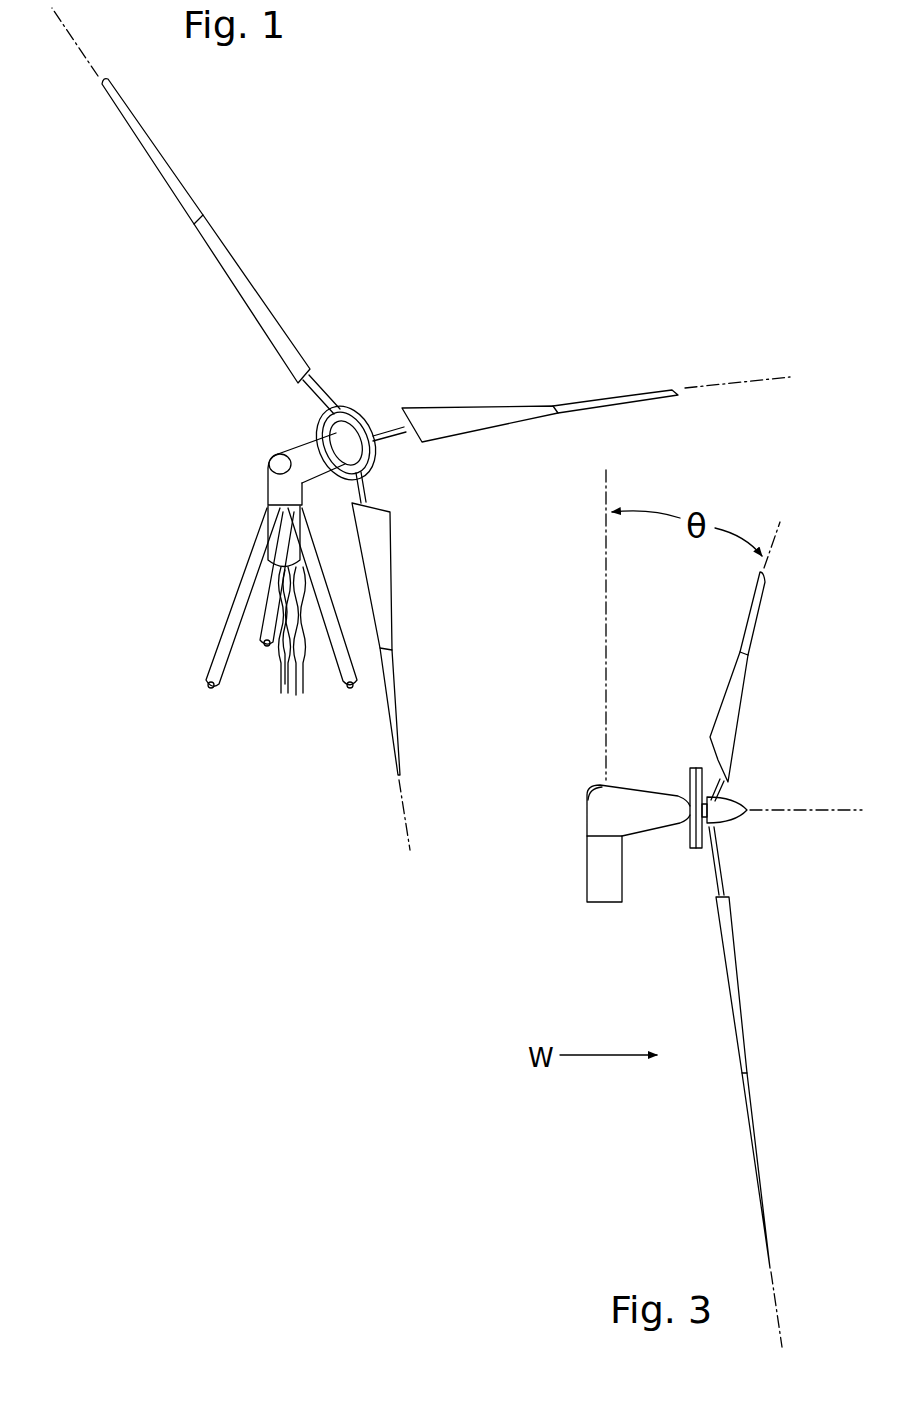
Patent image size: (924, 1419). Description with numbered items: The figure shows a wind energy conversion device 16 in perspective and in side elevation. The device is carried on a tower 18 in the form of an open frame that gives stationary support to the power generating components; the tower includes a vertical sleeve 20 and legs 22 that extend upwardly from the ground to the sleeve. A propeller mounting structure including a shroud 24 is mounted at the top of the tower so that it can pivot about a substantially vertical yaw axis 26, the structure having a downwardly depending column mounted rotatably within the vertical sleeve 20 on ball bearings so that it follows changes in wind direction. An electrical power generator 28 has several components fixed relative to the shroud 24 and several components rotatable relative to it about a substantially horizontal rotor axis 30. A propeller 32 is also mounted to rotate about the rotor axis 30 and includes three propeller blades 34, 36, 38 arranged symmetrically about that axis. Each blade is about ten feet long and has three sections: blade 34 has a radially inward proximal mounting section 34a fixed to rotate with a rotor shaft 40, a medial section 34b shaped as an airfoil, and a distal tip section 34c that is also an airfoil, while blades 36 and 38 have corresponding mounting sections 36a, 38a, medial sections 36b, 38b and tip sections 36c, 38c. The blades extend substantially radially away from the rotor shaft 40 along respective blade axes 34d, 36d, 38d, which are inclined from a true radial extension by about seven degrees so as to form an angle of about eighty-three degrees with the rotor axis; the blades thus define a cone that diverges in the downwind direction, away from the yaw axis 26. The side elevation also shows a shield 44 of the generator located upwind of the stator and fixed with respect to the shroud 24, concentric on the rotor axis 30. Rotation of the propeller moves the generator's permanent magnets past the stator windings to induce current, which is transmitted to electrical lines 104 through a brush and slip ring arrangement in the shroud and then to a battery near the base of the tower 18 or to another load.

In FIG. 1, the wind energy conversion device 16 is at (146, 398).
In FIG. 1, the tower 18 is at (181, 612).
In FIG. 1, the vertical sleeve 20 is at (283, 550).
In FIG. 3, the vertical sleeve 20 is at (592, 868).
In FIG. 1, the legs 22 is at (270, 600).
In FIG. 1, the shroud 24 is at (297, 450).
In FIG. 3, the shroud 24 is at (588, 818).
In FIG. 3, the yaw axis 26 is at (605, 748).
In FIG. 1, the electrical power generator 28 is at (351, 408).
In FIG. 3, the electrical power generator 28 is at (690, 860).
In FIG. 3, the rotor axis 30 is at (822, 812).
In FIG. 1, the propeller 32 is at (579, 354).
In FIG. 1, the propeller blade 34 is at (545, 425).
In FIG. 1, the proximal mounting section 34a is at (395, 437).
In FIG. 1, the medial section 34b is at (462, 410).
In FIG. 3, the medial section 34b is at (735, 702).
In FIG. 1, the distal tip section 34c is at (655, 397).
In FIG. 3, the distal tip section 34c is at (757, 605).
In FIG. 1, the blade axis 34d is at (727, 378).
In FIG. 3, the blade axis 34d is at (790, 535).
In FIG. 1, the propeller blade 36 is at (403, 685).
In FIG. 1, the mounting section 36a is at (368, 490).
In FIG. 3, the mounting section 36a is at (722, 858).
In FIG. 1, the medial section 36b is at (385, 580).
In FIG. 3, the medial section 36b is at (736, 960).
In FIG. 1, the tip section 36c is at (388, 725).
In FIG. 3, the tip section 36c is at (753, 1121).
In FIG. 1, the blade axis 36d is at (397, 810).
In FIG. 3, the blade axis 36d is at (778, 1305).
In FIG. 1, the propeller blade 38 is at (236, 256).
In FIG. 1, the mounting section 38a is at (318, 393).
In FIG. 1, the medial section 38b is at (249, 308).
In FIG. 1, the tip section 38c is at (158, 152).
In FIG. 1, the blade axis 38d is at (80, 44).
In FIG. 3, the rotor shaft 40 is at (706, 858).
In FIG. 3, the shield 44 is at (690, 778).
In FIG. 1, the electrical lines 104 is at (277, 683).